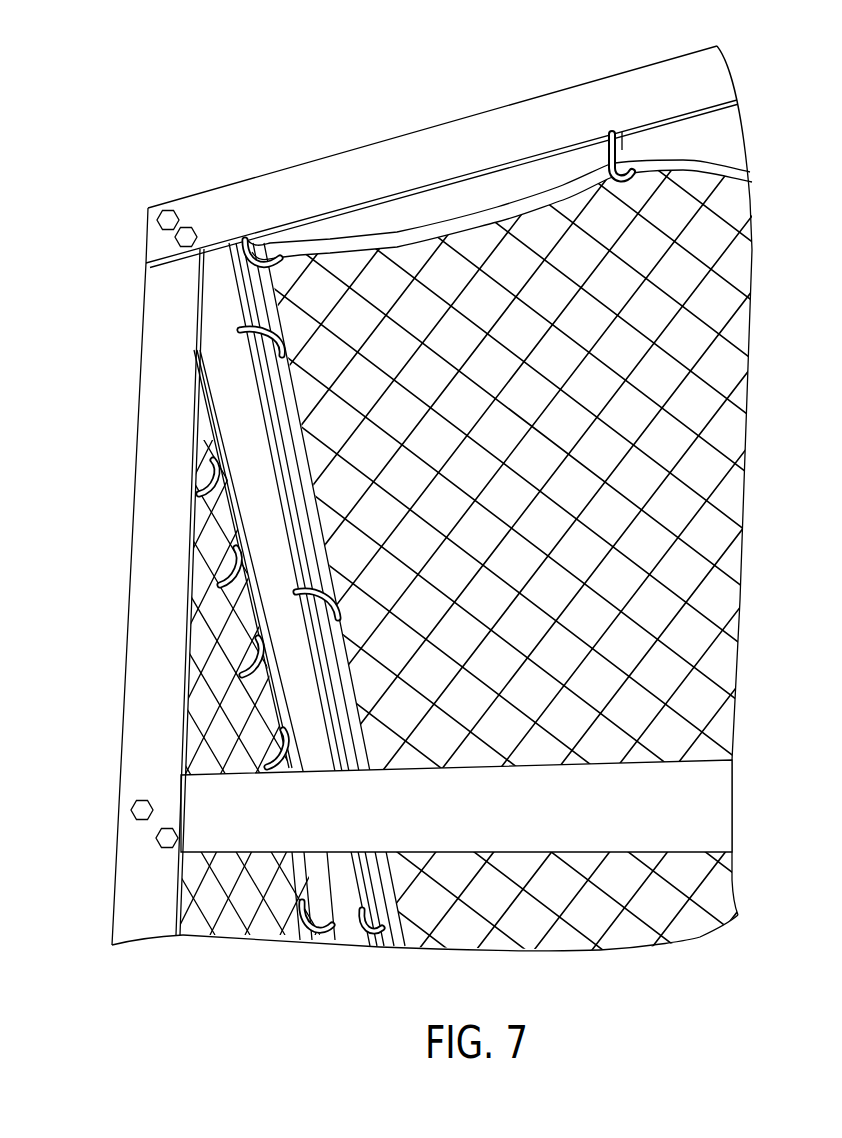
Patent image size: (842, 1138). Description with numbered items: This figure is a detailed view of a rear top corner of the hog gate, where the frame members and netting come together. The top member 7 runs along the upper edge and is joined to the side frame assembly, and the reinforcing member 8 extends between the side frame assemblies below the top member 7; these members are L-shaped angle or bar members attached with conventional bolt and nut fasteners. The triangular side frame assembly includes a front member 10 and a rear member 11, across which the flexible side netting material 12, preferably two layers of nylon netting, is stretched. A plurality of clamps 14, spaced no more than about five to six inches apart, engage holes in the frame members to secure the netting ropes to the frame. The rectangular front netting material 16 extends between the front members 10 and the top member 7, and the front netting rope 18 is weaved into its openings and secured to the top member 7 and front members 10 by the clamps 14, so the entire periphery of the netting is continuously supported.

The top member 7 is at (283, 197).
The reinforcing member 8 is at (257, 827).
The front member 10 is at (220, 315).
The rear member 11 is at (157, 643).
The side netting material 12 is at (205, 710).
The clamps 14 is at (262, 250).
The front netting material 16 is at (490, 278).
The front netting rope 18 is at (572, 183).